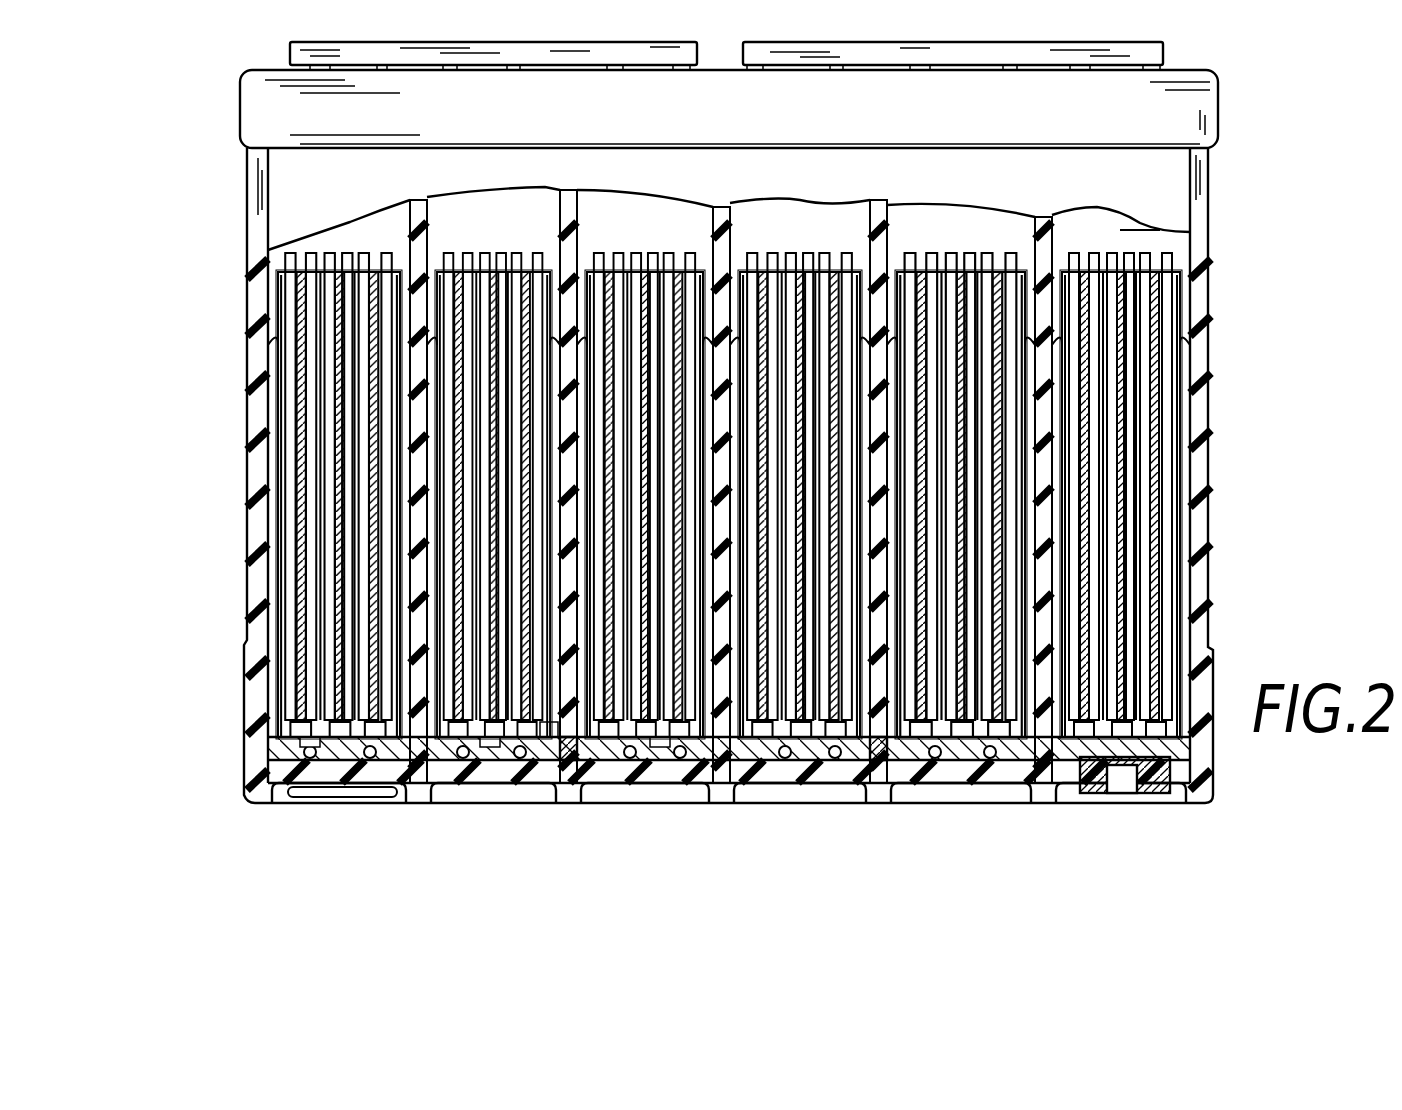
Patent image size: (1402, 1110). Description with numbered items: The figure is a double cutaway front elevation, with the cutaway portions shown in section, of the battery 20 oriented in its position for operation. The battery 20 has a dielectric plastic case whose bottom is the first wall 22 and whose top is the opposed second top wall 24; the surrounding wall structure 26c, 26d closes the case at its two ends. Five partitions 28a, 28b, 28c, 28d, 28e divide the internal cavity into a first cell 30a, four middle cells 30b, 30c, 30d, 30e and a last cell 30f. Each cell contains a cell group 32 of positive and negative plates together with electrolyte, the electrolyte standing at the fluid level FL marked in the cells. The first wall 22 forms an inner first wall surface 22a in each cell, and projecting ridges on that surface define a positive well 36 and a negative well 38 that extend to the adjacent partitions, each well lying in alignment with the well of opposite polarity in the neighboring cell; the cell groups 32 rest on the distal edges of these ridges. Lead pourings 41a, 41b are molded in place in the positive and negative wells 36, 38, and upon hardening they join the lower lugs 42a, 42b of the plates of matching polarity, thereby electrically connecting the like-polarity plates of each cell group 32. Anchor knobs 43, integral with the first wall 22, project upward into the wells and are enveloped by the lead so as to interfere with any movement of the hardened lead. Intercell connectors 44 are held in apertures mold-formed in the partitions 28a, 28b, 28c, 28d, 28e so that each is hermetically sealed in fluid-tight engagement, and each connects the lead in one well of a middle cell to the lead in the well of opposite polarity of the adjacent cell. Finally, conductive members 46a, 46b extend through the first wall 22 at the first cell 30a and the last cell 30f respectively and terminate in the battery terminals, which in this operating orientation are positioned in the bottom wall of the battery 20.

The battery 20 is at (1262, 166).
The first wall 22 is at (1207, 605).
The inner first wall surface 22a is at (290, 742).
The second top wall 24 is at (1216, 72).
The surrounding wall structure 26c is at (247, 413).
The surrounding wall structure 26d is at (1210, 400).
The partition 28a is at (412, 208).
The partition 28b is at (565, 197).
The partition 28c is at (730, 222).
The partition 28d is at (890, 223).
The partition 28e is at (1058, 227).
The first cell 30a is at (335, 477).
The middle cell 30b is at (493, 477).
The middle cell 30c is at (645, 477).
The middle cell 30d is at (800, 477).
The middle cell 30e is at (961, 477).
The last cell 30f is at (1121, 477).
The cell group 32 is at (807, 325).
The positive well 36 is at (490, 750).
The negative well 38 is at (660, 753).
The lead pouring 41a is at (594, 811).
The lead pouring 41b is at (310, 745).
The lower lug 42a is at (473, 732).
The lower lug 42b is at (320, 756).
The anchor knob 43 is at (680, 753).
The intercell connector 44 is at (575, 745).
The conductive member 46a is at (363, 797).
The conductive member 46b is at (1140, 792).
The fluid level FL is at (1150, 232).